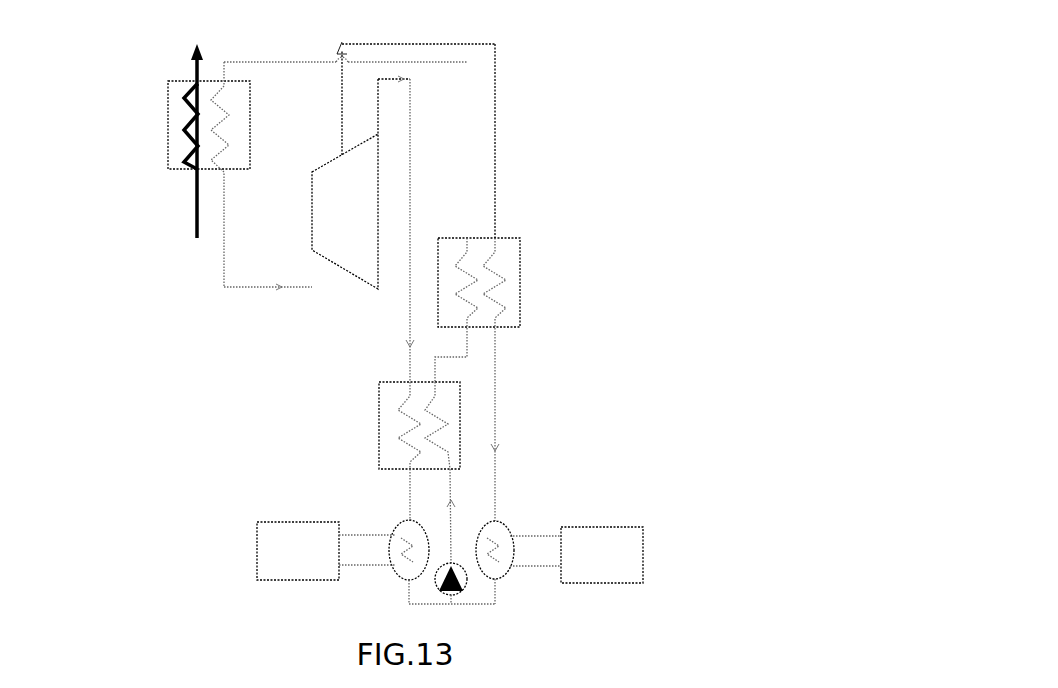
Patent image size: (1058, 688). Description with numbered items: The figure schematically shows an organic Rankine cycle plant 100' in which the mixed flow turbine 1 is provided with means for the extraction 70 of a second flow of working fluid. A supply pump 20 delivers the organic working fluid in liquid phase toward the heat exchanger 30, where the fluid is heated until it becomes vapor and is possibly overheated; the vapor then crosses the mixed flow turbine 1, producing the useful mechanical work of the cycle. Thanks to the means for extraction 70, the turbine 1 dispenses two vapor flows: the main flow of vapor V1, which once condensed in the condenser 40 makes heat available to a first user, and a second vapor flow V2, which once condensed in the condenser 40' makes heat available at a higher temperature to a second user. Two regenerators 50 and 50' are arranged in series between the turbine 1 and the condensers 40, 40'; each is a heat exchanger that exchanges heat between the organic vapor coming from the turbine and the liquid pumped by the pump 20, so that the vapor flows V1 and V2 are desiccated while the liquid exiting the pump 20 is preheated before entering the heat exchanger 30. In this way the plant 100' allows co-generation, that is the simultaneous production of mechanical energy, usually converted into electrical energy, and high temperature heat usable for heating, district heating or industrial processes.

The mixed flow turbine 1 is at (355, 178).
The supply pump 20 is at (463, 584).
The heat exchanger 30 is at (207, 145).
The condenser 40 is at (343, 525).
The condenser 40' is at (576, 525).
The regenerator 50 is at (599, 357).
The regenerator 50' is at (573, 427).
The means for extraction 70 is at (342, 119).
The organic Rankine cycle plant 100' is at (681, 87).
The main flow of vapor V1 is at (410, 295).
The second vapor flow V2 is at (495, 206).